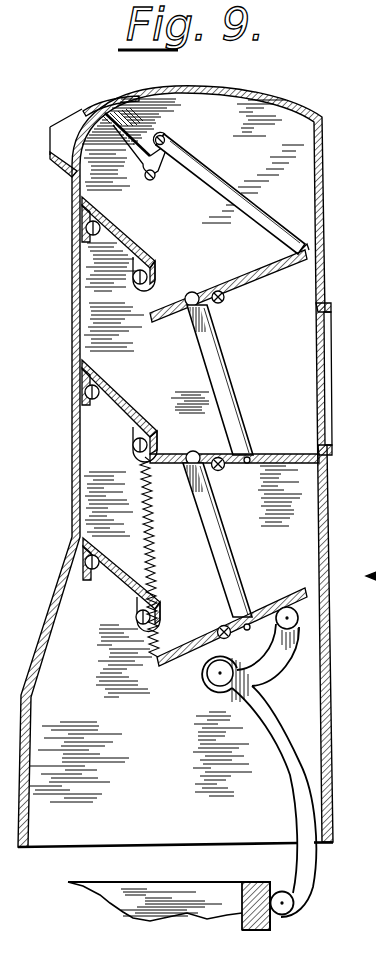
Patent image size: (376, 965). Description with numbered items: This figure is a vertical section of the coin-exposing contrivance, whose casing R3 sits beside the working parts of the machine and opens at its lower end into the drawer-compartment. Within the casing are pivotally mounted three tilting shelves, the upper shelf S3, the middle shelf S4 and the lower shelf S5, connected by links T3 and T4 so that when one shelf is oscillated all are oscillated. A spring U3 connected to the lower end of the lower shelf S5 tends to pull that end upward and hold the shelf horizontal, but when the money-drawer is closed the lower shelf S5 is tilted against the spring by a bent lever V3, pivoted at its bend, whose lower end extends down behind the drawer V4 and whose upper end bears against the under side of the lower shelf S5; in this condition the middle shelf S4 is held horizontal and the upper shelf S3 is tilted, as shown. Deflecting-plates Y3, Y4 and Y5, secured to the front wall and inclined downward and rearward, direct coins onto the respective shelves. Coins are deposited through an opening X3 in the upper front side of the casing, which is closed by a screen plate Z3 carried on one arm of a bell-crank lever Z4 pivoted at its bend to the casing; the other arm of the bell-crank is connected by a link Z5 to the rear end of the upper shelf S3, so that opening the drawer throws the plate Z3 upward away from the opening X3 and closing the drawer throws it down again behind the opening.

The opening X3 is at (95, 100).
The plate Z3 is at (72, 146).
The bell-crank lever Z4 is at (135, 152).
The link Z5 is at (253, 213).
The deflecting-plate Y3 is at (134, 241).
The deflecting-plate Y4 is at (123, 379).
The deflecting-plate Y5 is at (112, 561).
The upper shelf S3 is at (257, 291).
The middle shelf S4 is at (281, 448).
The lower shelf S5 is at (283, 587).
The casing R3 is at (301, 379).
The link T3 is at (239, 372).
The link T4 is at (228, 545).
The spring U3 is at (158, 566).
The bent lever V3 is at (268, 726).
The drawer V4 is at (169, 906).